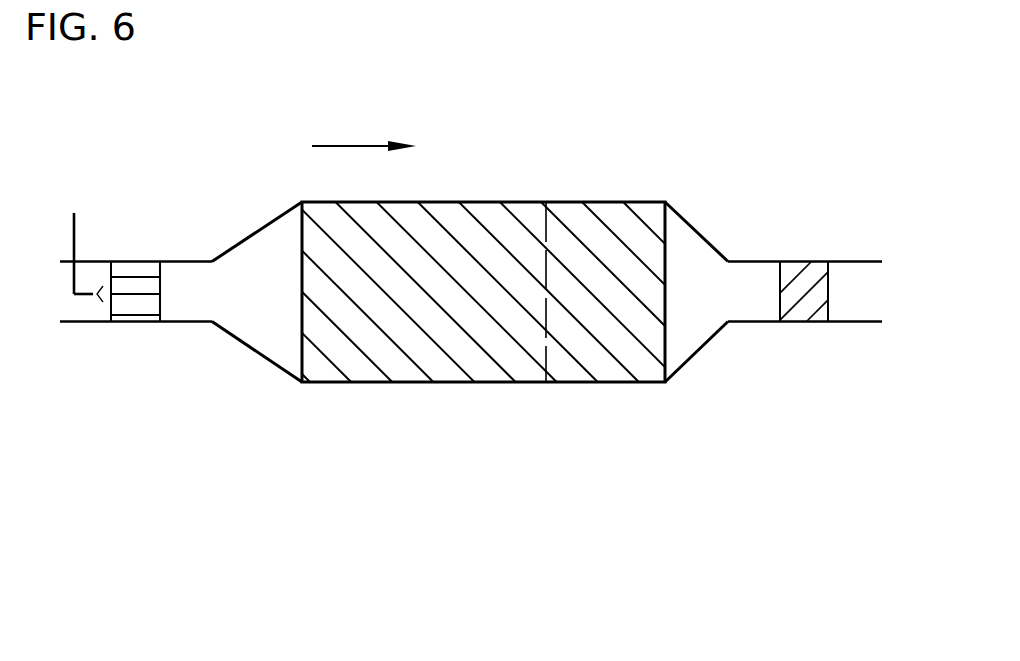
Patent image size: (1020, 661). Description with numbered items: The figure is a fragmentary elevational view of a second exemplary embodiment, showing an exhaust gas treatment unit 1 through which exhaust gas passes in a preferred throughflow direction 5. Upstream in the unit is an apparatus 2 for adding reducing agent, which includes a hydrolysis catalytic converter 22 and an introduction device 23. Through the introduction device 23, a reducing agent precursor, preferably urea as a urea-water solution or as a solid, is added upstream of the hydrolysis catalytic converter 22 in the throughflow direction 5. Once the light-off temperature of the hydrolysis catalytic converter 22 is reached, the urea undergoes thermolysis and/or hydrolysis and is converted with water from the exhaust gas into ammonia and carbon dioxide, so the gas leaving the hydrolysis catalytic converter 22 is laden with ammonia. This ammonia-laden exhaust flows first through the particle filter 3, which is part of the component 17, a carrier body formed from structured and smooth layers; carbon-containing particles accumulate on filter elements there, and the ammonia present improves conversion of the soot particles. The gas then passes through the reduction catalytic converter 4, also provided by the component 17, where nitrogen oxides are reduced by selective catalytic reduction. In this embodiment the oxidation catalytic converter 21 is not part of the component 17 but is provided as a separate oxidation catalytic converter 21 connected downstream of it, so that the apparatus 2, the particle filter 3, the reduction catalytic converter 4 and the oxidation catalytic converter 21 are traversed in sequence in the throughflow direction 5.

The exhaust gas treatment unit 1 is at (471, 305).
The apparatus for adding reducing agent 2 is at (181, 255).
The particle filter 3 is at (435, 365).
The reduction catalytic converter 4 is at (612, 365).
The throughflow direction 5 is at (366, 146).
The component 17 is at (483, 264).
The oxidation catalytic converter 21 is at (803, 308).
The hydrolysis catalytic converter 22 is at (133, 305).
The introduction device 23 is at (74, 213).